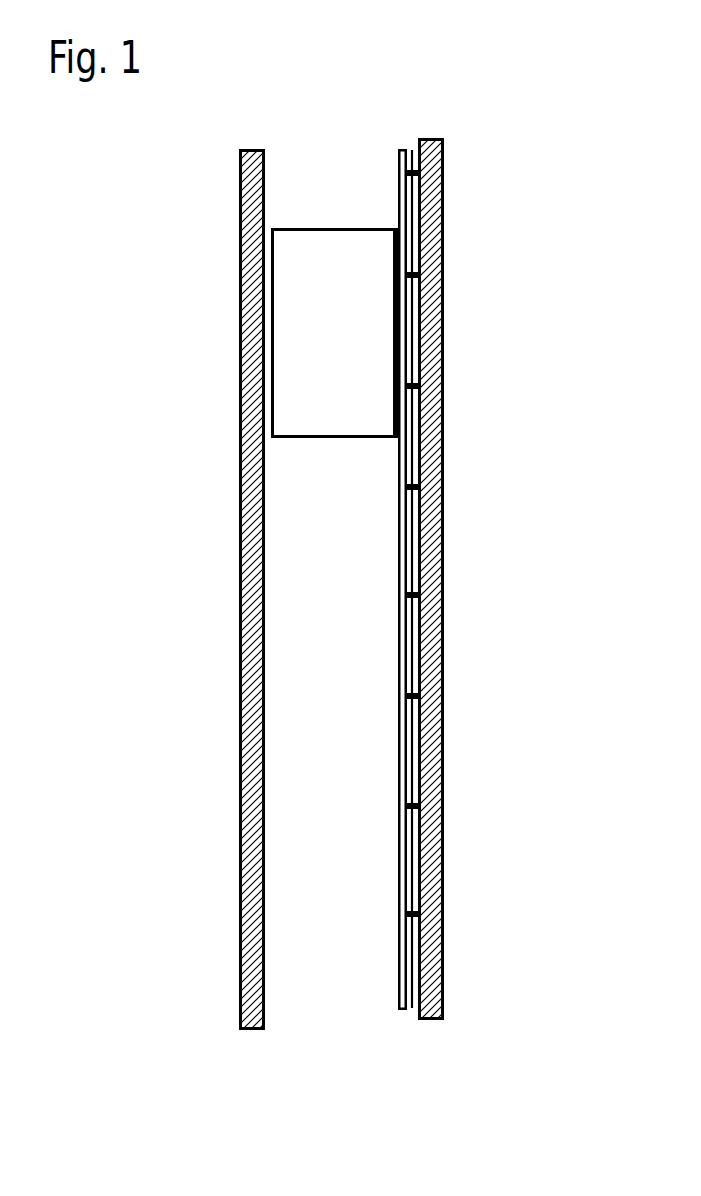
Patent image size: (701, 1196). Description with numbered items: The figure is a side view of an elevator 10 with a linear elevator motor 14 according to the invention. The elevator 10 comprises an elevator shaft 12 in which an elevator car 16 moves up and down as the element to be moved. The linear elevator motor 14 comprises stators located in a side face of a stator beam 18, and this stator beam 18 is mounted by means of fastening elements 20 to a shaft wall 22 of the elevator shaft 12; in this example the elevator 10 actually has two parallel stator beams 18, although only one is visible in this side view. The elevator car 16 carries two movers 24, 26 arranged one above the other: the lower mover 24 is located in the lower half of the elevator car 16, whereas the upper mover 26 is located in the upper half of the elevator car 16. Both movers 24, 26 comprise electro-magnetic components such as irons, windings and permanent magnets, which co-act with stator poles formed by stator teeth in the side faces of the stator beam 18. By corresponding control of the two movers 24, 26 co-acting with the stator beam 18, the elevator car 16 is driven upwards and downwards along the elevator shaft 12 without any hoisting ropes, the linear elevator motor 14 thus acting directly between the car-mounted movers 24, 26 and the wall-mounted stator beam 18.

The elevator 10 is at (187, 253).
The elevator shaft 12 is at (367, 517).
The linear elevator motor 14 is at (385, 208).
The elevator car 16 is at (314, 307).
The stator beam 18 is at (412, 650).
The fastening elements 20 is at (417, 803).
The shaft wall 22 is at (430, 897).
The lower mover 24 is at (410, 385).
The upper mover 26 is at (408, 248).